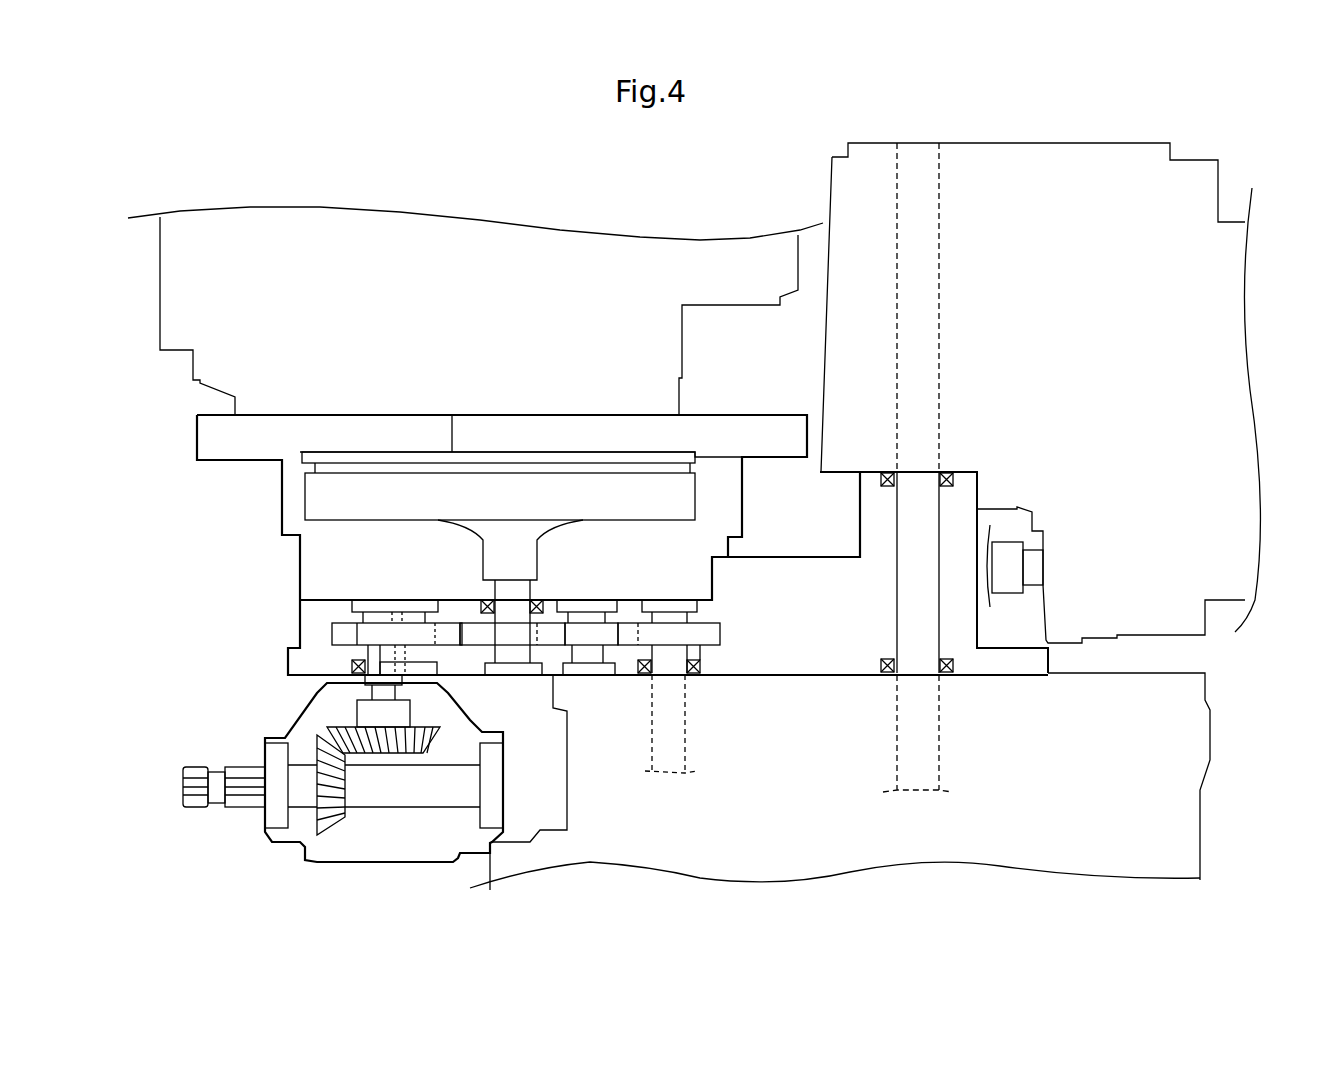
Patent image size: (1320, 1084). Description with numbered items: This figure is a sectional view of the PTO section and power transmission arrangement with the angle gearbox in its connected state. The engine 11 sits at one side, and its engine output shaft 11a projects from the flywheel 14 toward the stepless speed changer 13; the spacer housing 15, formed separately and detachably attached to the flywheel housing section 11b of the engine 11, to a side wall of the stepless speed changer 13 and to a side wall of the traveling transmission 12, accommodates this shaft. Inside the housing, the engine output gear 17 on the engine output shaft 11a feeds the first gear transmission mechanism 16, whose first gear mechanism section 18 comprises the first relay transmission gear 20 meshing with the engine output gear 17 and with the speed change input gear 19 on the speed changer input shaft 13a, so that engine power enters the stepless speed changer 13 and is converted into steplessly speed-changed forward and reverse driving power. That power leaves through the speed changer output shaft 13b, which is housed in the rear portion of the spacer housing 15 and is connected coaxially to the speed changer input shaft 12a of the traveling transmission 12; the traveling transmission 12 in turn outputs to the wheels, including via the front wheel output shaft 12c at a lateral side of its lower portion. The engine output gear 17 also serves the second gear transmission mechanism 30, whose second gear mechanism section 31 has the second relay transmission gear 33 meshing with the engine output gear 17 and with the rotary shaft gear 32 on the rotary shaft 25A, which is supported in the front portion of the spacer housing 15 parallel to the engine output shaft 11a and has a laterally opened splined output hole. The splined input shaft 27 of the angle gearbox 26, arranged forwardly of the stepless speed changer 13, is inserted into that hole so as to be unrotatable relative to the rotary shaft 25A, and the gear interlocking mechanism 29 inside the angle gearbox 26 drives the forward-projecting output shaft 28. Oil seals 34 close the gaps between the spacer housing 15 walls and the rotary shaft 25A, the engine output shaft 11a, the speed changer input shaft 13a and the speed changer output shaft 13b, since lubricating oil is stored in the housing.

The engine 11 is at (557, 300).
The engine output shaft 11a is at (555, 658).
The flywheel housing section 11b is at (282, 512).
The traveling transmission 12 is at (1050, 143).
The speed changer input shaft 12a is at (938, 367).
The front wheel output shaft 12c is at (1005, 542).
The stepless speed changer 13 is at (1130, 762).
The speed changer input shaft 13a is at (700, 652).
The speed changer output shaft 13b is at (895, 597).
The flywheel 14 is at (302, 498).
The spacer housing 15 is at (300, 612).
The first gear transmission mechanism 16 is at (512, 608).
The engine output gear 17 is at (510, 637).
The first gear mechanism section 18 is at (623, 608).
The speed change input gear 19 is at (670, 633).
The first relay transmission gear 20 is at (593, 635).
The rotary shaft 25A is at (365, 655).
The angle gearbox 26 is at (385, 863).
The input shaft 27 is at (382, 693).
The output shaft 28 is at (200, 780).
The gear interlocking mechanism 29 is at (315, 742).
The second gear transmission mechanism 30 is at (370, 608).
The second gear mechanism section 31 is at (466, 650).
The rotary shaft gear 32 is at (343, 630).
The second relay transmission gear 33 is at (410, 635).
The oil seal 34 is at (481, 605).